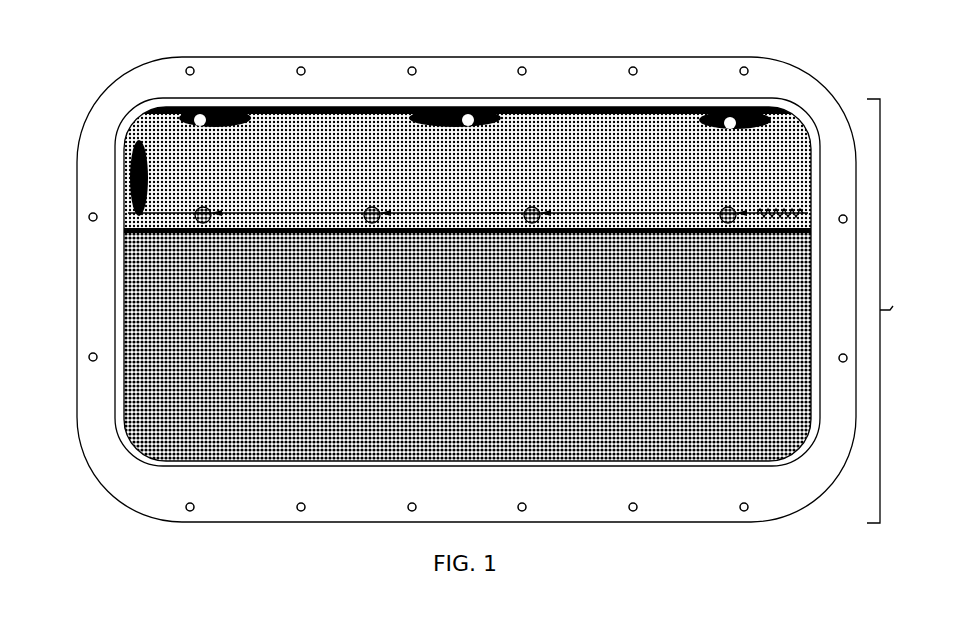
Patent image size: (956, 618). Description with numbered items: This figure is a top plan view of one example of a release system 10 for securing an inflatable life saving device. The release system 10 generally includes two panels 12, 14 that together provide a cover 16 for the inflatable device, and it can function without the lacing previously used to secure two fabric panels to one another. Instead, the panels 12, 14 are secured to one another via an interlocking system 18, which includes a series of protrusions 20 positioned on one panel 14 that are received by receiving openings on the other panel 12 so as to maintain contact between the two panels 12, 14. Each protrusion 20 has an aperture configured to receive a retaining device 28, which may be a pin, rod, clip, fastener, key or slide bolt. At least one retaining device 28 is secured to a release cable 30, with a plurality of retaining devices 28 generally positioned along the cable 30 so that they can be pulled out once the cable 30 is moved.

The release system 10 is at (808, 59).
The panel 12 is at (611, 172).
The panel 14 is at (486, 349).
The cover 16 is at (890, 309).
The interlocking system 18 is at (104, 163).
The protrusion 20 is at (208, 210).
The retaining device 28 is at (202, 211).
The release cable 30 is at (498, 210).